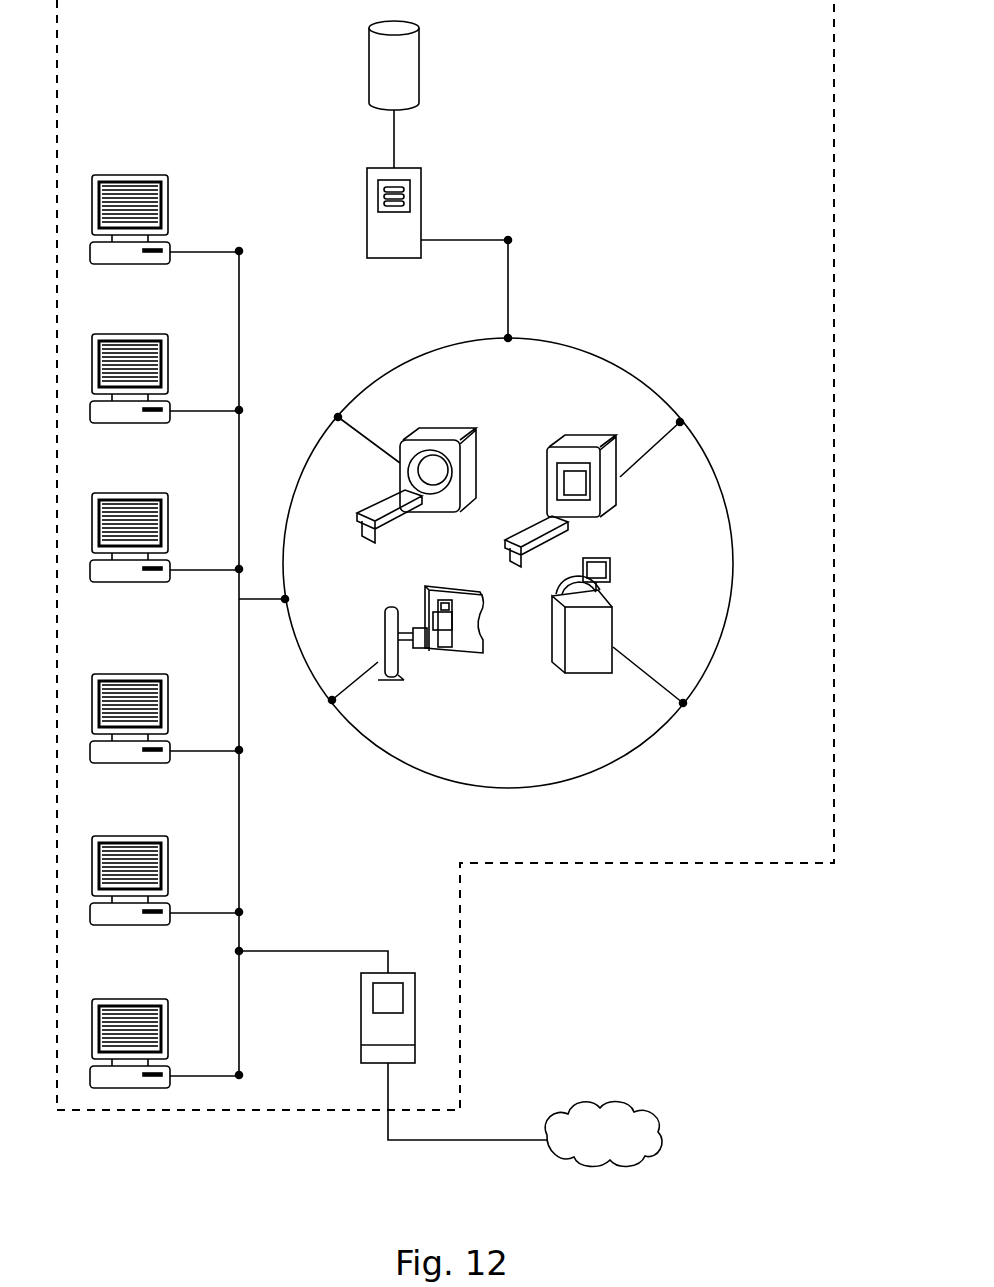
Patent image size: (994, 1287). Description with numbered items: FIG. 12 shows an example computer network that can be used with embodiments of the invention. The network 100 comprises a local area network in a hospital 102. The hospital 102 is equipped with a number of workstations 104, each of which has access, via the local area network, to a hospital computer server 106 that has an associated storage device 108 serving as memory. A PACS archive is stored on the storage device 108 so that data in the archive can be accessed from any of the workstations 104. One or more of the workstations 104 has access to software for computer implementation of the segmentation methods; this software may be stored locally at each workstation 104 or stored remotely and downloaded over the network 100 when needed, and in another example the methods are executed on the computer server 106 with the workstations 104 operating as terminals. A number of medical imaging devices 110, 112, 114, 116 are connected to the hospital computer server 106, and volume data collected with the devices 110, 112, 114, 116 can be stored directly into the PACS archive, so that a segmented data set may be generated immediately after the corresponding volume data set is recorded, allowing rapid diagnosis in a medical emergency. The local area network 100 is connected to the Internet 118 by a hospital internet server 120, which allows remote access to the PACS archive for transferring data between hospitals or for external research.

The network 100 is at (915, 67).
The hospital 102 is at (800, 67).
The workstations 104 is at (140, 175).
The hospital computer server 106 is at (421, 185).
The storage device (memory) 108 is at (420, 62).
The medical imaging device 110 is at (438, 427).
The medical imaging device 112 is at (590, 434).
The medical imaging device 114 is at (582, 672).
The medical imaging device 116 is at (403, 660).
The Internet 118 is at (631, 1150).
The hospital internet server 120 is at (415, 1000).